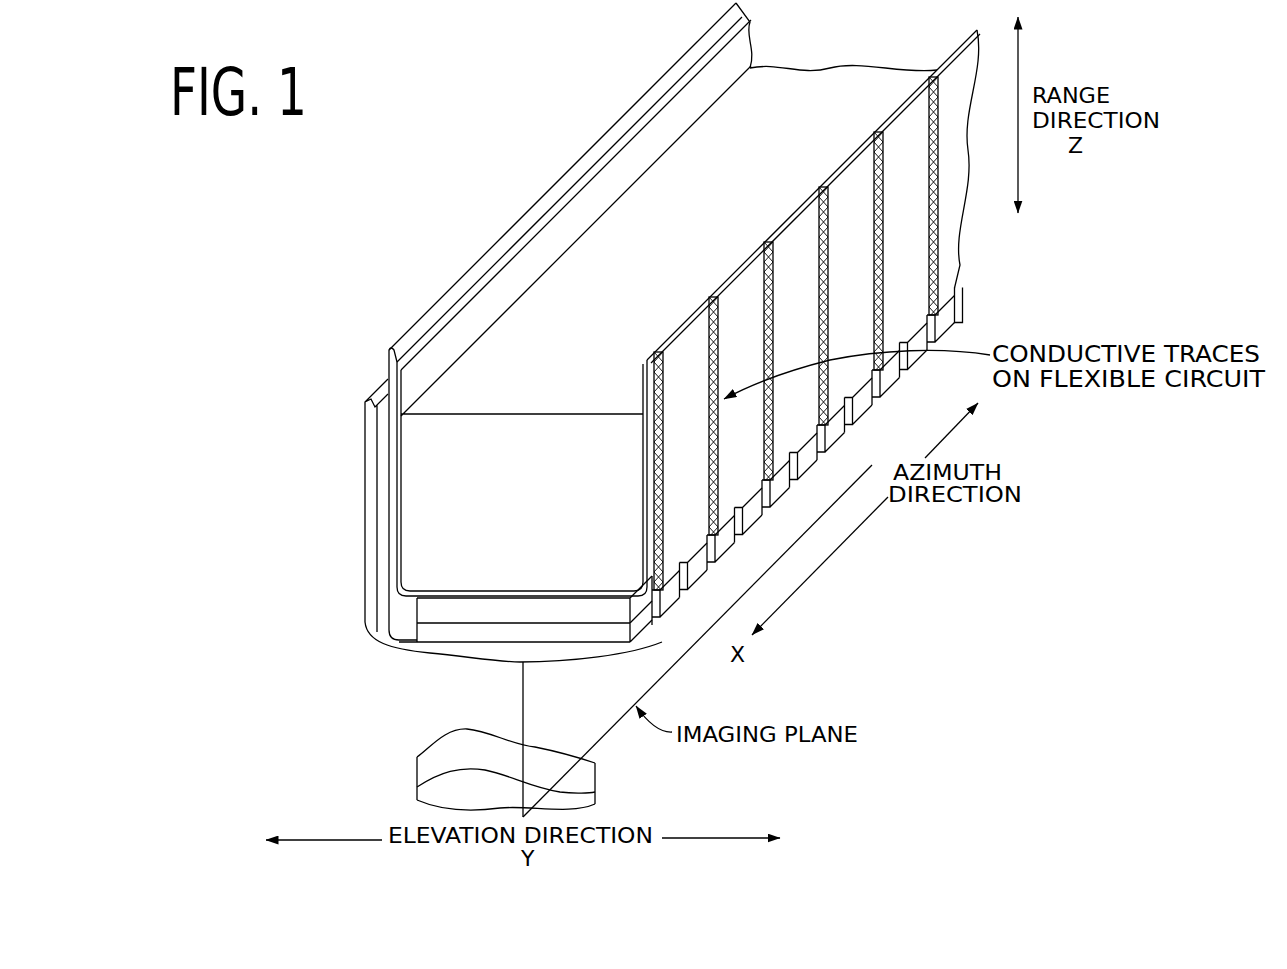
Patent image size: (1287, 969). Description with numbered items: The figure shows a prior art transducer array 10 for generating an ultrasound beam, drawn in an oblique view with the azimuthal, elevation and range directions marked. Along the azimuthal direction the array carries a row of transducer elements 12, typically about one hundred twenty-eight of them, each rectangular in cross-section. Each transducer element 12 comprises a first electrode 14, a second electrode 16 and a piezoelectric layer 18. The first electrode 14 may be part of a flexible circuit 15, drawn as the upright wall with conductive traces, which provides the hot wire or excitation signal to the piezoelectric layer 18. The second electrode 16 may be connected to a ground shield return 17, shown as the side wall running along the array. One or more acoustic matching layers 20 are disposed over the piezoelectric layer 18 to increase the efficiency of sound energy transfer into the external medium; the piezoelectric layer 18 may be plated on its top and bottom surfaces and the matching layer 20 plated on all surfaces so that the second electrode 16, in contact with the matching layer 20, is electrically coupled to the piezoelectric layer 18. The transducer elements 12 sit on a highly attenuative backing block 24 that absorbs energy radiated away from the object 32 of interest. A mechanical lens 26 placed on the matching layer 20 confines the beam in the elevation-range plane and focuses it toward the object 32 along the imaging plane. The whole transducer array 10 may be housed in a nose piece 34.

The transducer array 10 is at (503, 200).
The transducer element 12 is at (953, 330).
The first electrode 14 is at (478, 590).
The flexible circuit 15 is at (392, 347).
The second electrode 16 is at (556, 645).
The ground shield return 17 is at (387, 360).
The piezoelectric layer 18 is at (455, 613).
The acoustic matching layer 20 is at (437, 632).
The backing block 24 is at (522, 452).
The mechanical lens 26 is at (487, 645).
The object of interest 32 is at (460, 795).
The nose piece 34 is at (377, 437).